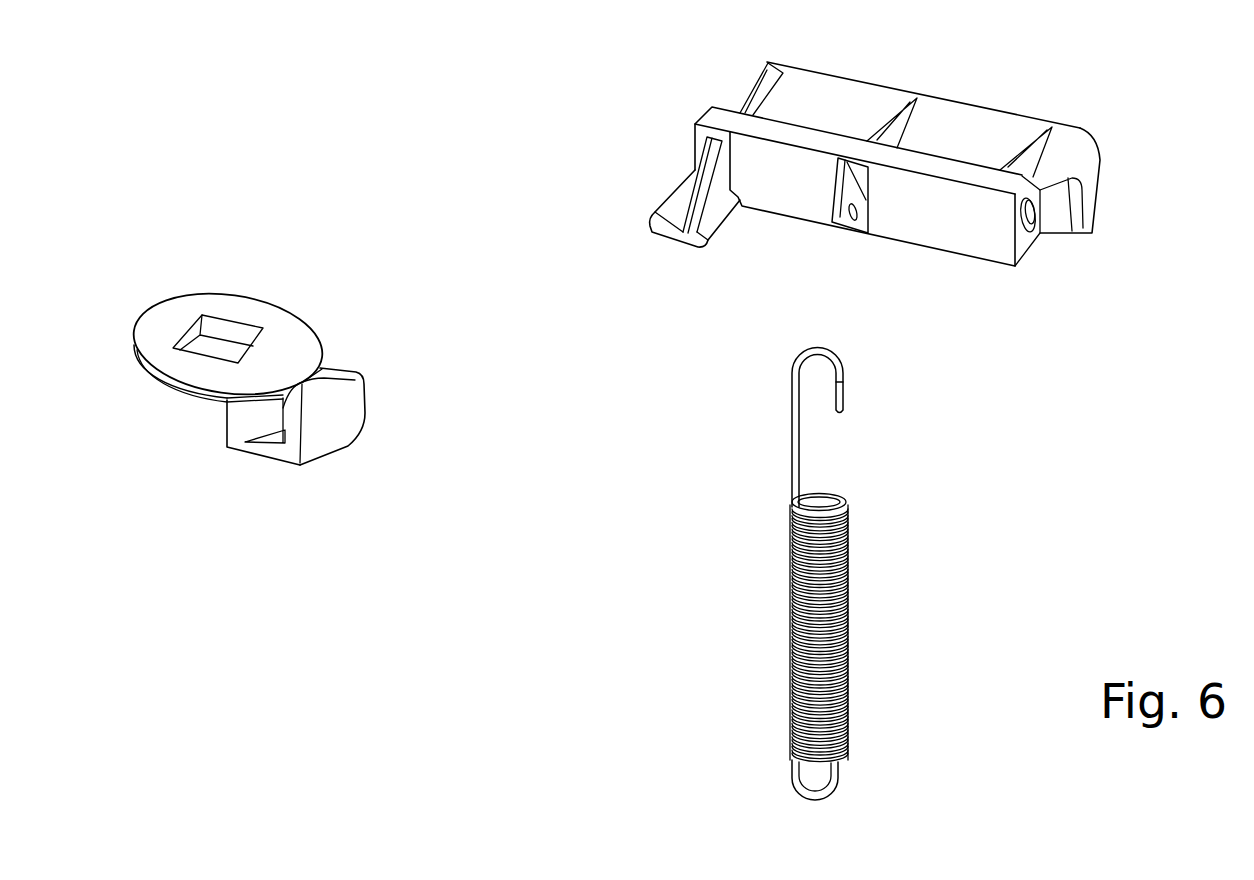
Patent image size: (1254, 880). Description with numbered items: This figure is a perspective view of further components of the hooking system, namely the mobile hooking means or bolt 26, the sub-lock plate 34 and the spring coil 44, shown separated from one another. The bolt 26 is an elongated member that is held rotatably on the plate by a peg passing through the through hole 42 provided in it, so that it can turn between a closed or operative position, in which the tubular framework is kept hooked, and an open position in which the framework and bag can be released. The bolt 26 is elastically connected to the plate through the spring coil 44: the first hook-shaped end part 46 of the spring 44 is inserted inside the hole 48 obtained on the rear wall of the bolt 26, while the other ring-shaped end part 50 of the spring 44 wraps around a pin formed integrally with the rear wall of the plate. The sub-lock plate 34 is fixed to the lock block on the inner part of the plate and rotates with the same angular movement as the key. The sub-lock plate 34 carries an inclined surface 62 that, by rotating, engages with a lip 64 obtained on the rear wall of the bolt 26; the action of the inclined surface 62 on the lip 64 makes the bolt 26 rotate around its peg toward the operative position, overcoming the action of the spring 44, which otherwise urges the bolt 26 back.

The bolt 26 is at (875, 195).
The sub-lock plate 34 is at (256, 298).
The through hole 42 is at (1045, 228).
The spring coil 44 is at (877, 576).
The first hook-shaped end part 46 is at (843, 398).
The hole 48 is at (867, 235).
The ring-shaped end part 50 is at (843, 790).
The inclined surface 62 is at (337, 378).
The lip 64 is at (687, 240).